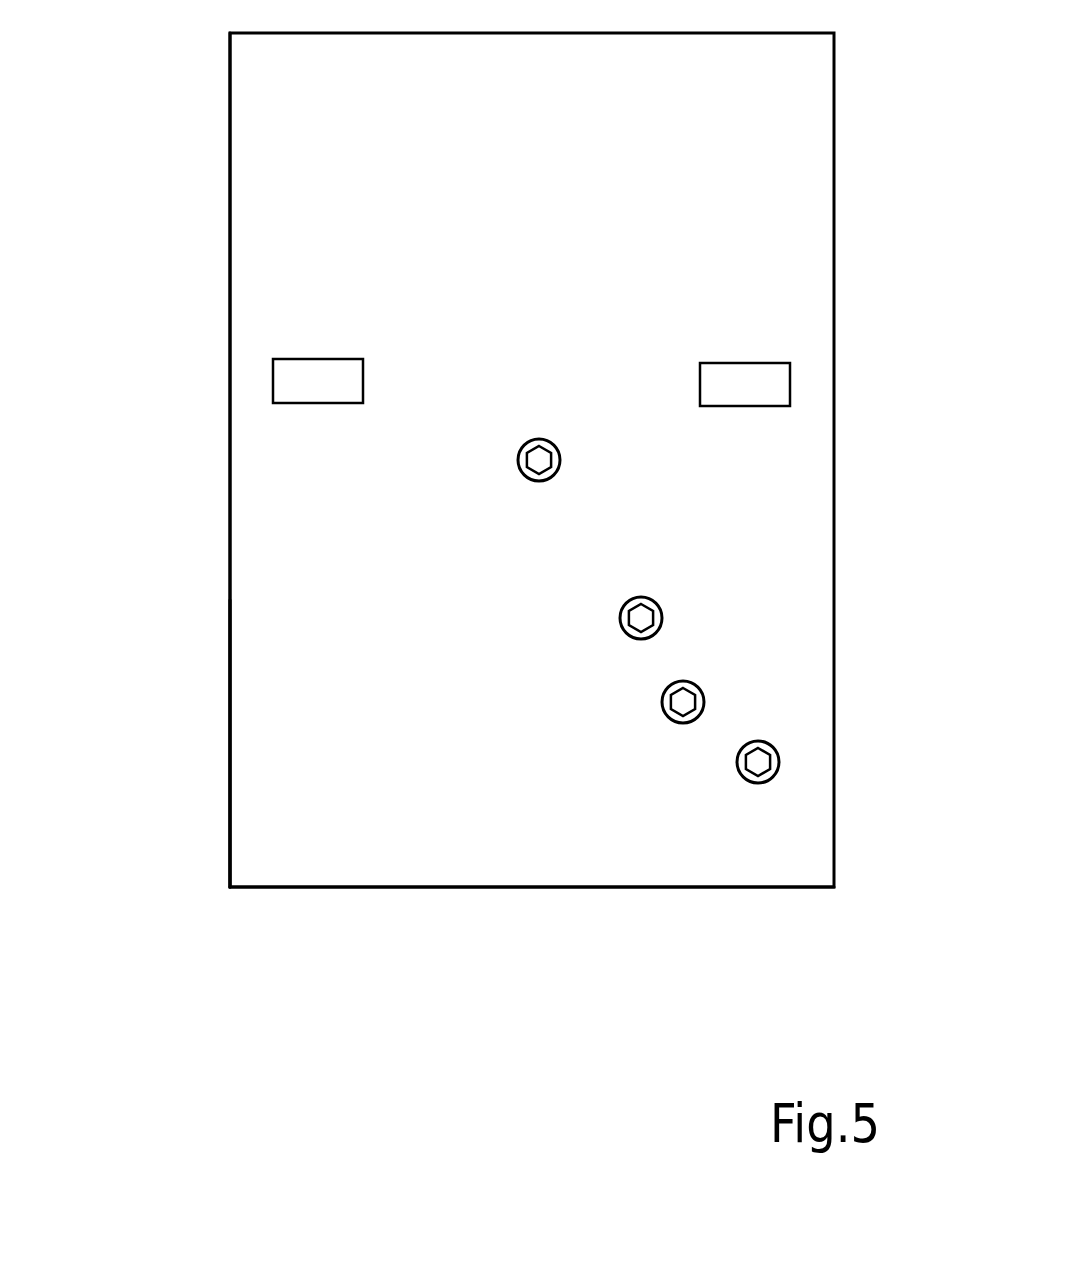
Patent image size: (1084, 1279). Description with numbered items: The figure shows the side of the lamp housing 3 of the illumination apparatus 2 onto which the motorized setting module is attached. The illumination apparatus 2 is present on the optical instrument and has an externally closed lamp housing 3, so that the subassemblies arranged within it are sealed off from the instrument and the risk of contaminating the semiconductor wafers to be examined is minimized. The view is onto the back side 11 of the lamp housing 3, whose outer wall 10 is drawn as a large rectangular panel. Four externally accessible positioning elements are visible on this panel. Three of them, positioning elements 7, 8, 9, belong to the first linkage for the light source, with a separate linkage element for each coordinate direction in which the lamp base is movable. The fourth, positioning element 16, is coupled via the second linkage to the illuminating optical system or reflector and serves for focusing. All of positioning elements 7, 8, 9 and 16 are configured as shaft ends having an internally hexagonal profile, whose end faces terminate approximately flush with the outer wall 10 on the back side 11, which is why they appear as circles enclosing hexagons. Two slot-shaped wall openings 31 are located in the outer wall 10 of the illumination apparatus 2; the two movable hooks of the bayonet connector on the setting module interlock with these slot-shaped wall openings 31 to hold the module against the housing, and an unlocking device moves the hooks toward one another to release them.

The illumination apparatus 2 is at (305, 158).
The lamp housing 3 is at (230, 302).
The slot-shaped wall openings 31 is at (298, 388).
The positioning element 16 is at (543, 466).
The positioning element 7 is at (645, 620).
The positioning element 8 is at (688, 699).
The positioning element 9 is at (765, 765).
The back side 11 is at (273, 743).
The outer wall 10 is at (258, 858).